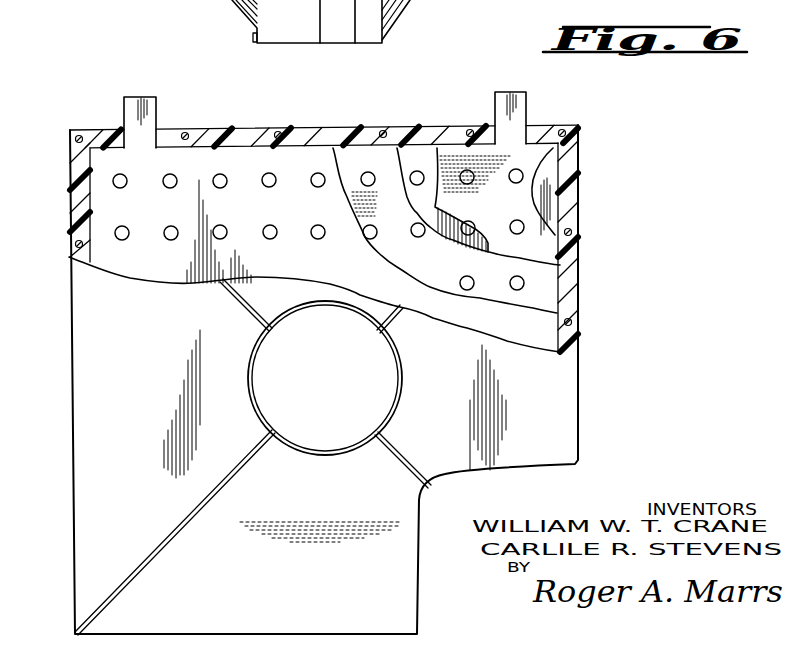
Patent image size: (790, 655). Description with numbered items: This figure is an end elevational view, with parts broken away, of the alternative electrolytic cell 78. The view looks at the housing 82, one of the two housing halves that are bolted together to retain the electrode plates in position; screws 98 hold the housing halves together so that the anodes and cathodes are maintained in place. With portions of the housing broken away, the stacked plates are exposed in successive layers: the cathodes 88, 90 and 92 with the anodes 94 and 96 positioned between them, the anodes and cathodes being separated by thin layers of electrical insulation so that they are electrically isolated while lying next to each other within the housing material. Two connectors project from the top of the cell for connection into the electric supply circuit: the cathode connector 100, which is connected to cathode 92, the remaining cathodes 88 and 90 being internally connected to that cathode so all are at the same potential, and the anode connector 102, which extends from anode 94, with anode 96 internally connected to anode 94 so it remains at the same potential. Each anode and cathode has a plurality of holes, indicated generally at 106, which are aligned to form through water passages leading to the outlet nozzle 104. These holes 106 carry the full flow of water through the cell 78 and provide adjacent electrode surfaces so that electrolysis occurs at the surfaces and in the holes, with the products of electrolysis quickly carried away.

The cell 78 is at (618, 237).
The housing 82 is at (85, 329).
The cathode 88 is at (543, 155).
The cathode 90 is at (409, 153).
The cathode 92 is at (240, 162).
The anode 94 is at (450, 153).
The anode 96 is at (358, 153).
The screws 98 is at (77, 133).
The cathode connector 100 is at (140, 100).
The anode connector 102 is at (513, 91).
The outlet nozzle 104 is at (403, 387).
The holes 106 is at (368, 239).